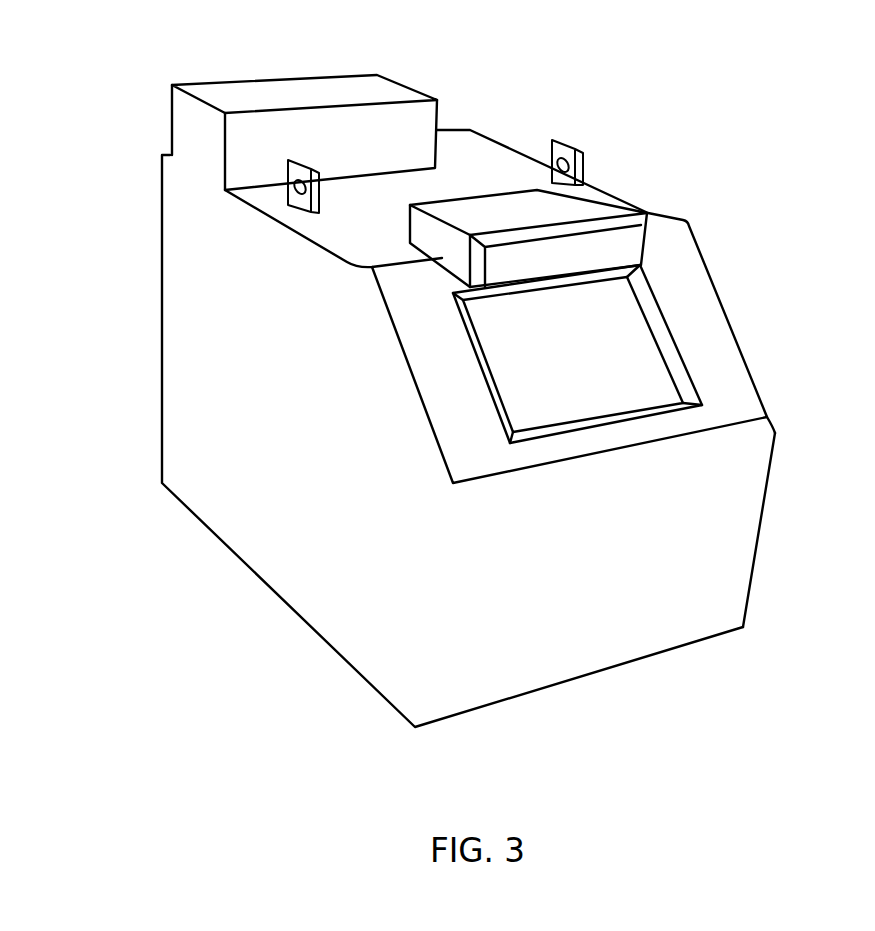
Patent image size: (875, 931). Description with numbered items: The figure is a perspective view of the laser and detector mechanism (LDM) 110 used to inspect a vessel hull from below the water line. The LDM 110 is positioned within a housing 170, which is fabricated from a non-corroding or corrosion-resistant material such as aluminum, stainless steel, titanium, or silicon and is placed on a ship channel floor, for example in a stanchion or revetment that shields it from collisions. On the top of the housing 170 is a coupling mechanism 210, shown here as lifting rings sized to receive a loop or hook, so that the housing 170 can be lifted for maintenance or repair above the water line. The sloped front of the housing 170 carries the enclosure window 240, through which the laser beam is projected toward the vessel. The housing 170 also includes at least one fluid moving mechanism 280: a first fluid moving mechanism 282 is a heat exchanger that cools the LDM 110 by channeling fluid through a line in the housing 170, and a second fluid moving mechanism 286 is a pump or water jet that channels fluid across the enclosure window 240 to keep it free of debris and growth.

The laser and detector mechanism (LDM) 110 is at (746, 718).
The housing 170 is at (742, 548).
The coupling mechanism 210 is at (258, 195).
The enclosure window 240 is at (646, 357).
The fluid moving mechanism 280 is at (463, 152).
The first fluid moving mechanism 282 is at (438, 91).
The second fluid moving mechanism 286 is at (657, 214).